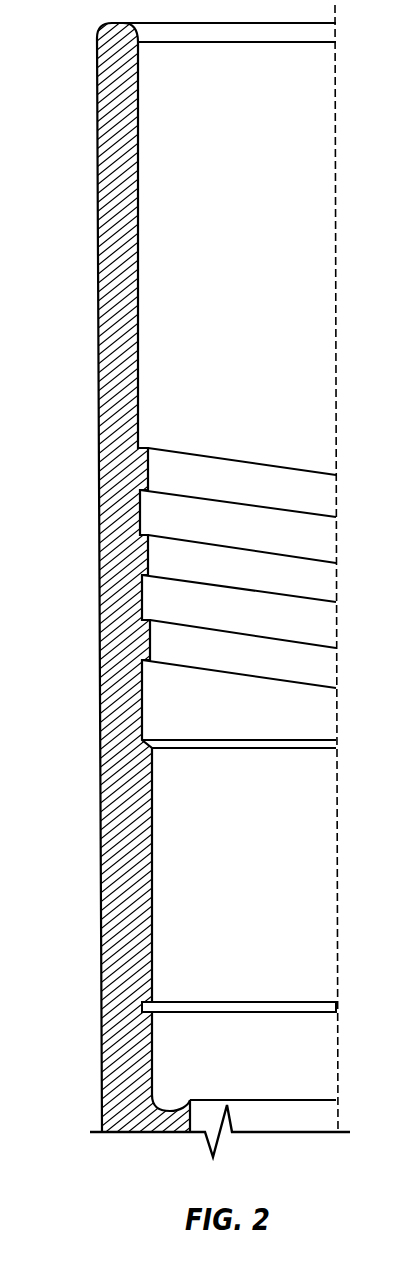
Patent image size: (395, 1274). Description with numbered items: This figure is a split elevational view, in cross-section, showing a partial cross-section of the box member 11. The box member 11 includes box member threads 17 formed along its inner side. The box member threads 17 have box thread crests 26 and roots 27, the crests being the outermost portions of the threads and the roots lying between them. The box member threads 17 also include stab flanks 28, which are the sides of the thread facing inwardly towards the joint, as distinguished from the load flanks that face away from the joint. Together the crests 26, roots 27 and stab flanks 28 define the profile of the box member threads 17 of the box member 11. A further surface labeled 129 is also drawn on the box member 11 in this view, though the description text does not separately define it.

The box member 11 is at (100, 815).
The box thread crests 26 is at (145, 470).
The roots 27 is at (140, 517).
The stab flanks 28 is at (141, 533).
The box member threads 17 is at (150, 559).
The lower thread surface 129 is at (143, 662).